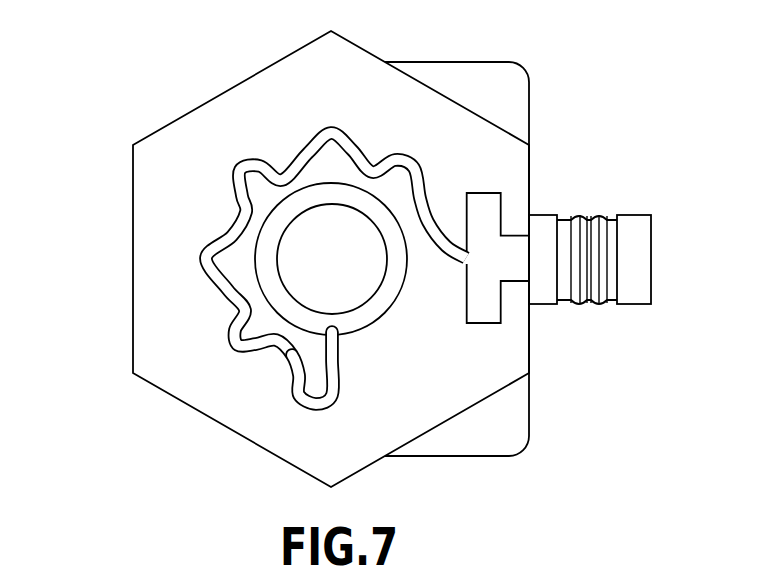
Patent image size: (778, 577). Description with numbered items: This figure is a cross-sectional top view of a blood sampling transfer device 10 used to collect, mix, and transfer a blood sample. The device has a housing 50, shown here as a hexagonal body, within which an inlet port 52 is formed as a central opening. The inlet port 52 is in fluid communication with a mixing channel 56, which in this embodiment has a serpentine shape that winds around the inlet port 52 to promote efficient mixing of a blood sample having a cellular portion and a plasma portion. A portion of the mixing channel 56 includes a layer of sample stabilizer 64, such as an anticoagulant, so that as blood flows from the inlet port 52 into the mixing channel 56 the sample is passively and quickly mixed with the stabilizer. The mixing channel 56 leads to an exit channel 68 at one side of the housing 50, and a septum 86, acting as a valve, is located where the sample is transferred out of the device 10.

The blood sampling transfer device 10 is at (140, 95).
The housing 50 is at (218, 96).
The inlet port 52 is at (337, 257).
The mixing channel 56 is at (237, 300).
The layer of sample stabilizer 64 is at (330, 334).
The exit channel 68 is at (521, 255).
The septum 86 is at (583, 203).